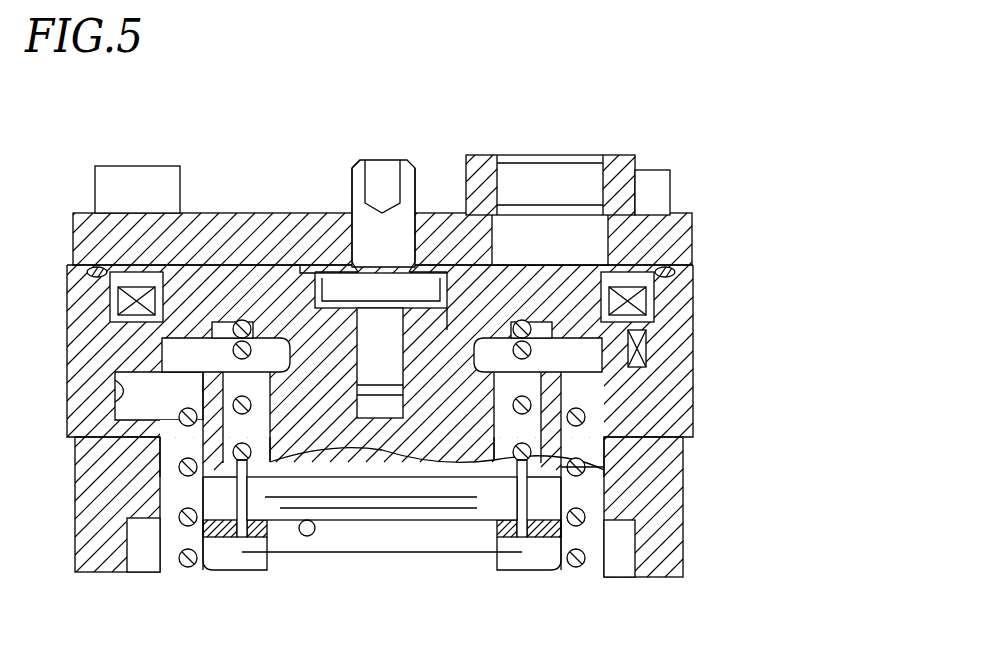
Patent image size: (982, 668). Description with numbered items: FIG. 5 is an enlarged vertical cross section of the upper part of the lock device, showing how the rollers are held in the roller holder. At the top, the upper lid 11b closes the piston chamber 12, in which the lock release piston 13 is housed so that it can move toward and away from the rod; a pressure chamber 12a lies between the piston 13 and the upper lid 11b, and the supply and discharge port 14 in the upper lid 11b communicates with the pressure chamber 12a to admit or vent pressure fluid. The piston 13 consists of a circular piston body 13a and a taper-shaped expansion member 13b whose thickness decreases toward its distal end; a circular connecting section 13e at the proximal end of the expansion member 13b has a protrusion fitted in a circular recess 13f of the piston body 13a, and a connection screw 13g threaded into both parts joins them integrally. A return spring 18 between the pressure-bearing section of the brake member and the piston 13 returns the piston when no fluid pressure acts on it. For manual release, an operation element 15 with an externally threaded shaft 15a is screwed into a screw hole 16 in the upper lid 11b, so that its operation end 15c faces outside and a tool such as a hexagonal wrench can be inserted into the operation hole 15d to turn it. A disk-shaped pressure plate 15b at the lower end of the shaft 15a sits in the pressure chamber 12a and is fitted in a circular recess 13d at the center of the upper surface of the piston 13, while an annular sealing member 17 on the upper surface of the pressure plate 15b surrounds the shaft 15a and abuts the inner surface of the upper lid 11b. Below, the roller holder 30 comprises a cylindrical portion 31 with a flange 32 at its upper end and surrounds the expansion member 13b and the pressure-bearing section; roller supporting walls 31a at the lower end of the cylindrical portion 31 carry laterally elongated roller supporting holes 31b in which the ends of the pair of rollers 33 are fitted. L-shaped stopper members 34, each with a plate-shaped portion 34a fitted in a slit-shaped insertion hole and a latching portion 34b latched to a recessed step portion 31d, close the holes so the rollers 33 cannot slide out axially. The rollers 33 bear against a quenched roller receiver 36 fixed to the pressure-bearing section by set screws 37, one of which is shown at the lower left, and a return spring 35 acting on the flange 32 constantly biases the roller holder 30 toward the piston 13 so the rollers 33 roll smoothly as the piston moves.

The upper lid 11b is at (655, 235).
The piston chamber 12 is at (127, 402).
The pressure chamber 12a is at (148, 265).
The piston 13 is at (557, 262).
The piston body 13a is at (573, 296).
The expansion member 13b is at (483, 480).
The recess 13d is at (283, 262).
The connecting section 13e is at (453, 375).
The recess 13f is at (300, 268).
The connection screw 13g is at (465, 347).
The supply and discharge port 14 is at (538, 185).
The operation element 15 is at (375, 152).
The shaft 15a is at (415, 205).
The pressure plate 15b is at (318, 266).
The operation end 15c is at (360, 158).
The operation hole 15d is at (395, 170).
The screw hole 16 is at (414, 258).
The sealing member 17 is at (333, 272).
The return spring 18 is at (560, 365).
The roller holder 30 is at (523, 486).
The cylindrical portion 31 is at (587, 418).
The roller supporting walls 31a is at (225, 527).
The roller supporting holes 31b is at (217, 510).
The recessed step portion 31d is at (560, 467).
The flange 32 is at (580, 387).
The rollers 33 is at (410, 493).
The stopper members 34 is at (233, 485).
The plate-shaped portion 34a is at (247, 507).
The latching portion 34b is at (255, 507).
The return spring 35 is at (160, 458).
The roller receiver 36 is at (370, 530).
The set screws 37 is at (308, 536).